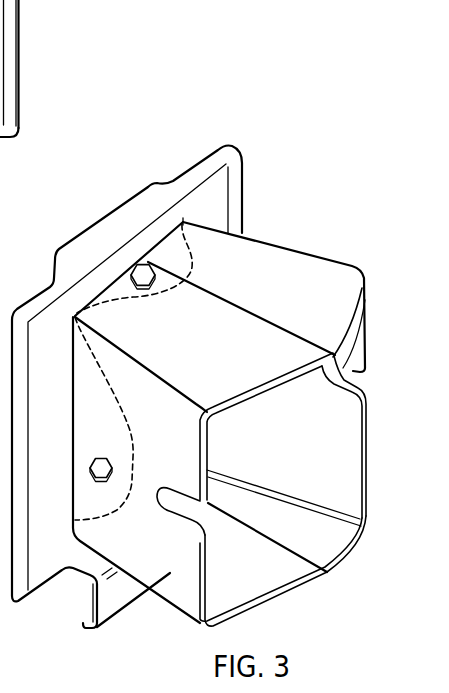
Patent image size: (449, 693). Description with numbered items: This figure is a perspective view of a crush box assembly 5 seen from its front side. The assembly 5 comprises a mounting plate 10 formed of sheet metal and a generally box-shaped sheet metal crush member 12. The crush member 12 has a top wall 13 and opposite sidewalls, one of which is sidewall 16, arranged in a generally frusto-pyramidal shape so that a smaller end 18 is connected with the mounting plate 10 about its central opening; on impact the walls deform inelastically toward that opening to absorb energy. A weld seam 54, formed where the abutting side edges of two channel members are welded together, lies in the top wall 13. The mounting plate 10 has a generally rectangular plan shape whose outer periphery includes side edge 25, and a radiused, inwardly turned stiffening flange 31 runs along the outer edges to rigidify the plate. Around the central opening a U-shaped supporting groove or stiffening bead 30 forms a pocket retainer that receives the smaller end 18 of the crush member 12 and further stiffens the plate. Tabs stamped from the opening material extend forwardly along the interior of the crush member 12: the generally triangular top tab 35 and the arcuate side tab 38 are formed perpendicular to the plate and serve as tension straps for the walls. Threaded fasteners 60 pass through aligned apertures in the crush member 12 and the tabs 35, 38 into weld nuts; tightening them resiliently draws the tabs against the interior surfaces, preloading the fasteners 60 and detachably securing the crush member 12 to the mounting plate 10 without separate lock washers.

The crush box assembly 5 is at (260, 86).
The mounting plate 10 is at (199, 148).
The crush member 12 is at (280, 233).
The top wall 13 is at (335, 272).
The sidewall 16 is at (170, 573).
The smaller end 18 is at (355, 295).
The side edge 25 is at (21, 79).
The stiffening bead 30 is at (0, 150).
The stiffening flange 31 is at (10, 24).
The top tab 35 is at (193, 253).
The side tab 38 is at (140, 442).
The seam 54 is at (245, 303).
The threaded fastener 60 is at (140, 262).